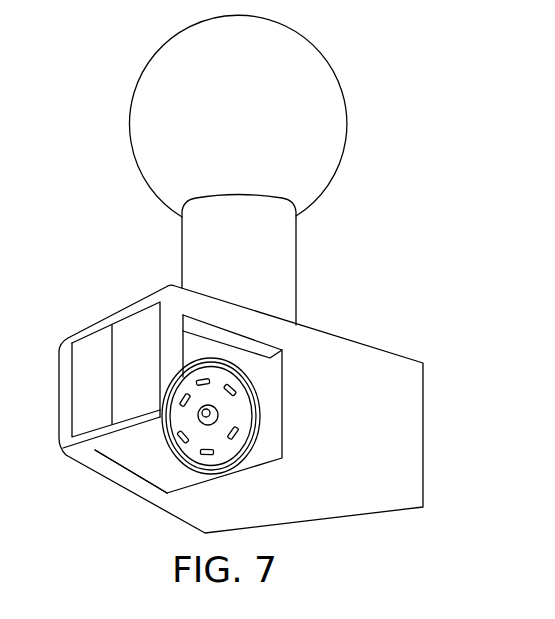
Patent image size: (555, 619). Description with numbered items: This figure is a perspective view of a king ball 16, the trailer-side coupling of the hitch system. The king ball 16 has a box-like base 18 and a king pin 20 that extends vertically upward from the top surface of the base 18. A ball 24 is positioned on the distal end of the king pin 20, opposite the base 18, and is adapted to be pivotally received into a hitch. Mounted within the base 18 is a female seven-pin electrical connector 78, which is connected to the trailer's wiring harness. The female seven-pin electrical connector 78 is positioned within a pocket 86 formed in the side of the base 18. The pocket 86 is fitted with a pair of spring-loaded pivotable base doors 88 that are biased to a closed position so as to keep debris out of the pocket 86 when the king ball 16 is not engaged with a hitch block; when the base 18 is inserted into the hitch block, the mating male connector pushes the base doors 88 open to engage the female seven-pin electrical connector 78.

The king ball 16 is at (245, 295).
The base 18 is at (410, 427).
The king pin 20 is at (275, 262).
The ball 24 is at (170, 145).
The female 7-pin electrical connector 78 is at (207, 433).
The pocket 86 is at (133, 452).
The base doors 88 is at (133, 377).